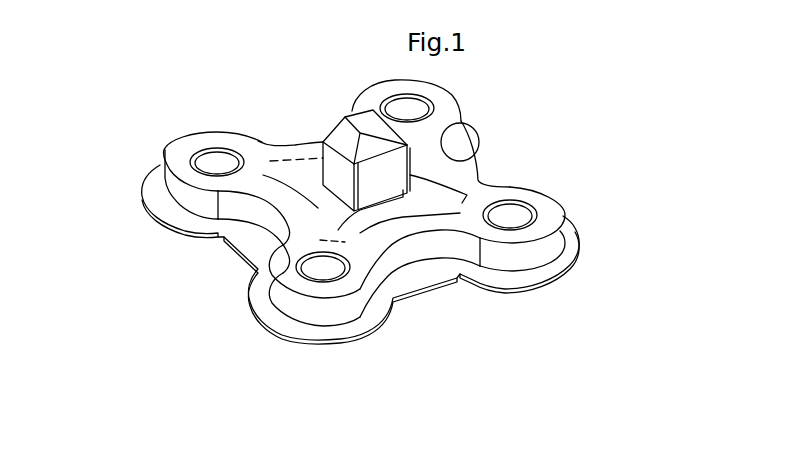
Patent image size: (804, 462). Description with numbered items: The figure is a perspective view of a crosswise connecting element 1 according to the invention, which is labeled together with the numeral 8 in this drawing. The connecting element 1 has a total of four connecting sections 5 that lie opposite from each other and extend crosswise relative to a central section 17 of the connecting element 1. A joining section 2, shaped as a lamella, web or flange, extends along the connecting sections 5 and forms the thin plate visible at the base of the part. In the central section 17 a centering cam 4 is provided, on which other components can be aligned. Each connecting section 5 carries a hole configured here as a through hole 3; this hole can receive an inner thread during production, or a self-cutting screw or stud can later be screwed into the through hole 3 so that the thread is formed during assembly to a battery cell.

The connecting element 1 is at (380, 208).
The fastening element 8 is at (195, 343).
The joining section 2 is at (573, 249).
The through hole 3 is at (212, 163).
The centering cam 4 is at (341, 135).
The connecting section 5 is at (210, 160).
The central section 17 is at (425, 169).